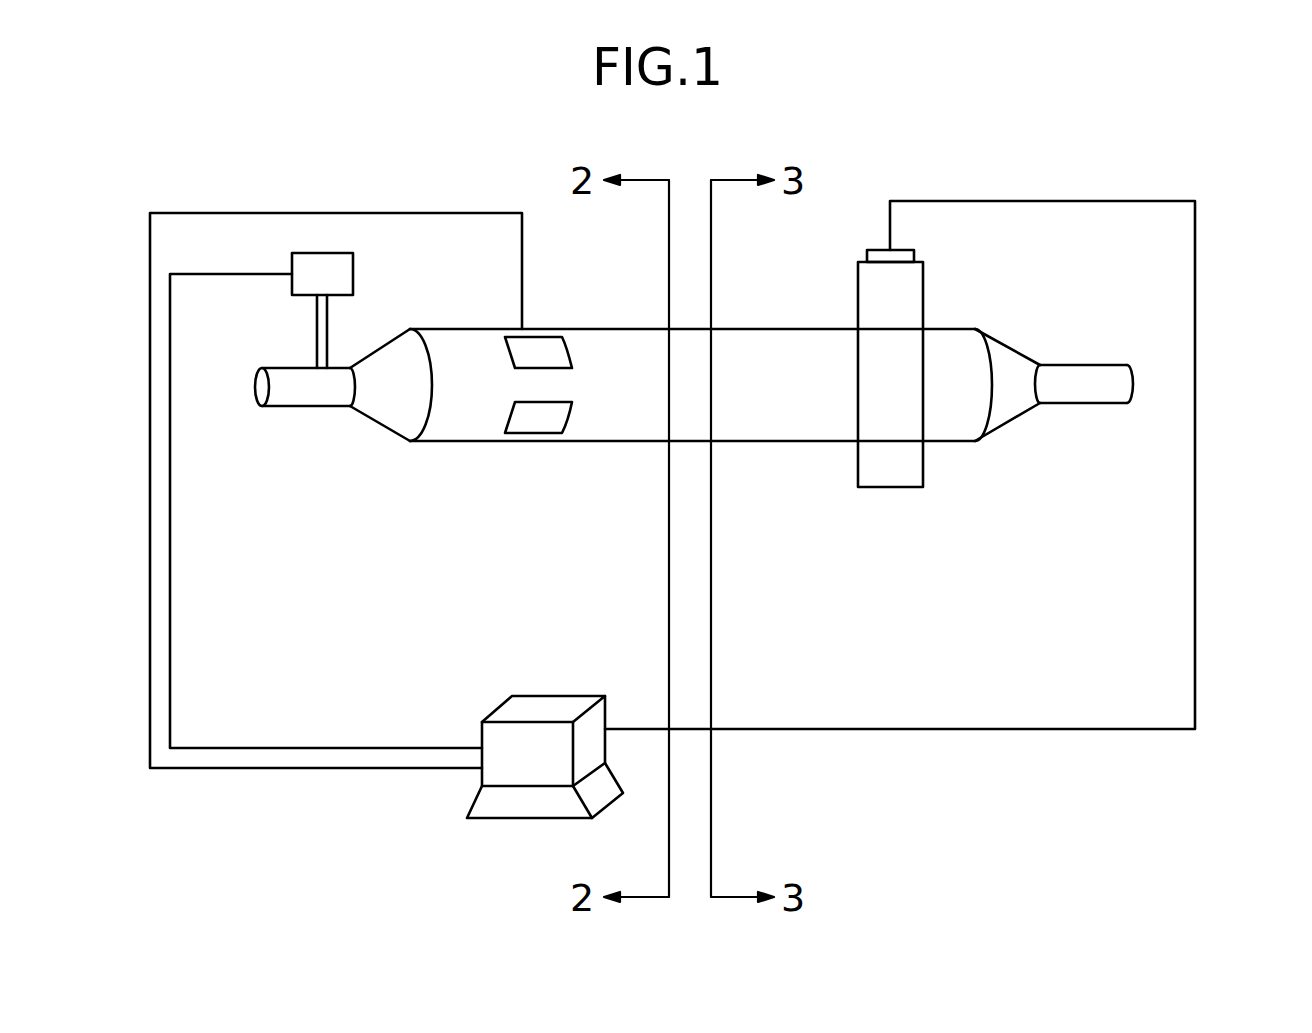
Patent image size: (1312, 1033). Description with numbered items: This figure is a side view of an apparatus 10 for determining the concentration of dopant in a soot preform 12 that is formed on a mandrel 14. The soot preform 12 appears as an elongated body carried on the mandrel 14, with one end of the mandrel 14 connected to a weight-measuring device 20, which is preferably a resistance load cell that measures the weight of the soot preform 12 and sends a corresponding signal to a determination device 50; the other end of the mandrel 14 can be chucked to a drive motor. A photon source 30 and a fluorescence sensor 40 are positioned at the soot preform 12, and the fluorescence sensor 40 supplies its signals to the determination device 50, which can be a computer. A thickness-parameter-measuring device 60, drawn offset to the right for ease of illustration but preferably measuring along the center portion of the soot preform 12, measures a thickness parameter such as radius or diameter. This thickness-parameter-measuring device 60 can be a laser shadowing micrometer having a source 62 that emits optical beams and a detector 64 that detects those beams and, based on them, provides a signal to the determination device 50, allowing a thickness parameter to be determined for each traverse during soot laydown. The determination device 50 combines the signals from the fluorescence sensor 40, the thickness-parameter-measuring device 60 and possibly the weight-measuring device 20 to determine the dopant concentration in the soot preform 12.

The apparatus 10 is at (1198, 162).
The soot preform 12 is at (955, 329).
The mandrel 14 is at (325, 395).
The weight-measuring device 20 is at (345, 280).
The photon source 30 is at (542, 418).
The fluorescence sensor 40 is at (545, 340).
The determination device 50 is at (476, 800).
The thickness-parameter-measuring device 60 is at (879, 356).
The source 62 is at (923, 457).
The detector 64 is at (912, 253).